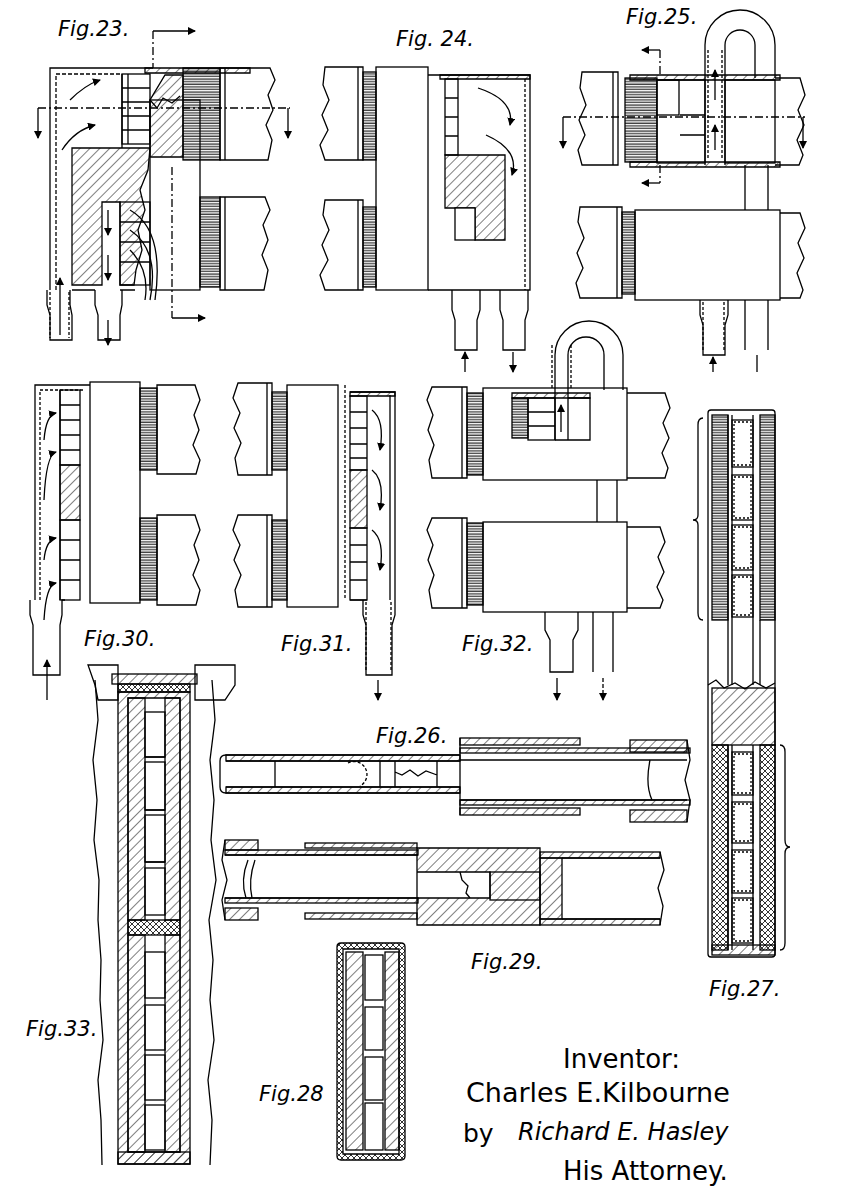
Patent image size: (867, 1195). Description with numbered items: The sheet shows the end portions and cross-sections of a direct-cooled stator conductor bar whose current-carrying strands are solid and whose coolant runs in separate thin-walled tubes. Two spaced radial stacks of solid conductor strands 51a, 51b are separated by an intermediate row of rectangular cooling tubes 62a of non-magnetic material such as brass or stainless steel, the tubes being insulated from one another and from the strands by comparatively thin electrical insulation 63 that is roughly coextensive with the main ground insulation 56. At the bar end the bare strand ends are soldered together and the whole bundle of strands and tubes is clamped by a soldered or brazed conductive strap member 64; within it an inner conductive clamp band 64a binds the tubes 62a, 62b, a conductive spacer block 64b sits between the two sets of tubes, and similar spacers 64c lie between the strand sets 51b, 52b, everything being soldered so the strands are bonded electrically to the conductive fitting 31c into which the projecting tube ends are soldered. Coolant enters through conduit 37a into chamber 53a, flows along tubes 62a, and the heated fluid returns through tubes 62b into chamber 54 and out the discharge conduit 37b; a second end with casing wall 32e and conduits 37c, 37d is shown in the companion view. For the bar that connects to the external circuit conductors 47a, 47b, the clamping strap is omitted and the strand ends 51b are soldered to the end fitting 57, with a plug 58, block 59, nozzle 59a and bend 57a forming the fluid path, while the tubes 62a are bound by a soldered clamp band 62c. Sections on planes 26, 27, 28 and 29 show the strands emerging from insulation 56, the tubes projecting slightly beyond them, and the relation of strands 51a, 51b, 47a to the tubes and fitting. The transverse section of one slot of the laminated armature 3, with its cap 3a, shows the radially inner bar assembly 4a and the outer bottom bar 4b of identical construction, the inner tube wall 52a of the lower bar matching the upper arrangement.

In FIG. 33, the laminated armature 3 is at (100, 868).
In FIG. 33, the frame cap 3a is at (185, 672).
In FIG. 23, the radially inner bar assembly 4a is at (270, 66).
In FIG. 24, the radially inner bar assembly 4a is at (345, 66).
In FIG. 25, the radially inner bar assembly 4a is at (598, 118).
In FIG. 30, the radially inner bar assembly 4a is at (185, 386).
In FIG. 31, the radially inner bar assembly 4a is at (252, 429).
In FIG. 32, the radially inner bar assembly 4a is at (447, 432).
In FIG. 27, the radially inner bar assembly 4a is at (721, 683).
In FIG. 33, the radially inner bar assembly 4a is at (125, 890).
In FIG. 23, the bottom bar 4b is at (268, 222).
In FIG. 24, the bottom bar 4b is at (326, 294).
In FIG. 25, the bottom bar 4b is at (605, 252).
In FIG. 30, the bottom bar 4b is at (200, 518).
In FIG. 31, the bottom bar 4b is at (252, 561).
In FIG. 32, the bottom bar 4b is at (455, 563).
In FIG. 27, the bottom bar 4b is at (794, 847).
In FIG. 33, the bottom bar 4b is at (125, 965).
In FIG. 23, the section plane 26- 26 is at (161, 134).
In FIG. 23, the section plane 27- 27 is at (189, 174).
In FIG. 25, the section plane 28- 28 is at (638, 117).
In FIG. 25, the section plane 29- 29 is at (682, 143).
In FIG. 23, the conductive fitting 31c is at (50, 78).
In FIG. 26, the conductive fitting 31c is at (272, 754).
In FIG. 24, the casing wall 32e is at (532, 74).
In FIG. 31, the casing wall 32e is at (386, 390).
In FIG. 23, the supply conduit 37a is at (50, 330).
In FIG. 30, the supply conduit 37a is at (60, 660).
In FIG. 23, the discharge conduit 37b is at (122, 330).
In FIG. 24, the inlet nozzle 37c is at (455, 338).
In FIG. 32, the inlet nozzle 37c is at (579, 656).
In FIG. 24, the outlet nozzle 37d is at (522, 332).
In FIG. 31, the outlet nozzle 37d is at (392, 660).
In FIG. 25, the external circuit conductor 47a is at (790, 78).
In FIG. 32, the external circuit conductor 47a is at (647, 394).
In FIG. 29, the external circuit conductor 47a is at (612, 926).
In FIG. 25, the external circuit conductor 47b is at (785, 300).
In FIG. 32, the external circuit conductor 47b is at (640, 527).
In FIG. 27, the conductor strand 51a is at (720, 420).
In FIG. 26, the conductor strand 51a is at (600, 759).
In FIG. 29, the conductor strand 51a is at (385, 848).
In FIG. 28, the conductor strand 51a is at (350, 990).
In FIG. 33, the conductor strand 51a is at (132, 725).
In FIG. 23, the conductor strand 51b is at (205, 95).
In FIG. 24, the conductor strand 51b is at (370, 120).
In FIG. 25, the conductor strand 51b is at (638, 128).
In FIG. 30, the conductor strand 51b is at (148, 440).
In FIG. 31, the conductor strand 51b is at (281, 395).
In FIG. 32, the conductor strand 51b is at (475, 434).
In FIG. 27, the conductor strand 51b is at (765, 595).
In FIG. 26, the conductor strand 51b is at (600, 806).
In FIG. 29, the conductor strand 51b is at (292, 908).
In FIG. 28, the conductor strand 51b is at (395, 1062).
In FIG. 33, the conductor strand 51b is at (175, 740).
In FIG. 27, the inner tube wall 52a is at (722, 940).
In FIG. 33, the inner tube wall 52a is at (128, 1070).
In FIG. 23, the conductor strand 52b is at (207, 215).
In FIG. 24, the conductor strand 52b is at (370, 260).
In FIG. 30, the conductor strand 52b is at (148, 572).
In FIG. 31, the conductor strand 52b is at (278, 600).
In FIG. 27, the conductor strand 52b is at (766, 748).
In FIG. 33, the conductor strand 52b is at (182, 1130).
In FIG. 23, the supply chamber 53a is at (92, 112).
In FIG. 26, the supply chamber 53a is at (292, 788).
In FIG. 23, the discharge chamber 54 is at (100, 318).
In FIG. 26, the discharge chamber 54 is at (358, 788).
In FIG. 23, the main insulation 56 is at (248, 68).
In FIG. 26, the main insulation 56 is at (662, 740).
In FIG. 29, the main insulation 56 is at (240, 890).
In FIG. 33, the main insulation 56 is at (120, 740).
In FIG. 25, the end fitting 57 is at (716, 168).
In FIG. 32, the end fitting 57 is at (562, 480).
In FIG. 29, the end fitting 57 is at (500, 855).
In FIG. 28, the end fitting 57 is at (346, 1008).
In FIG. 25, the conduit bend 57a is at (707, 62).
In FIG. 25, the plug 58 is at (722, 112).
In FIG. 29, the plug 58 is at (520, 872).
In FIG. 25, the block 59 is at (673, 296).
In FIG. 32, the block 59 is at (524, 528).
In FIG. 25, the nozzle 59a is at (704, 318).
In FIG. 23, the cooling tube 62a is at (148, 80).
In FIG. 24, the cooling tube 62a is at (450, 130).
In FIG. 25, the cooling tube 62a is at (702, 125).
In FIG. 30, the cooling tube 62a is at (77, 432).
In FIG. 31, the cooling tube 62a is at (358, 455).
In FIG. 27, the cooling tube 62a is at (750, 430).
In FIG. 26, the cooling tube 62a is at (430, 790).
In FIG. 29, the cooling tube 62a is at (440, 920).
In FIG. 28, the cooling tube 62a is at (380, 1015).
In FIG. 33, the cooling tube 62a is at (140, 830).
In FIG. 23, the cooling tube 62b is at (117, 238).
In FIG. 24, the cooling tube 62b is at (450, 232).
In FIG. 30, the cooling tube 62b is at (70, 532).
In FIG. 31, the cooling tube 62b is at (358, 575).
In FIG. 27, the cooling tube 62b is at (745, 930).
In FIG. 33, the cooling tube 62b is at (160, 1075).
In FIG. 25, the soldered clamp band 62c is at (662, 80).
In FIG. 28, the soldered clamp band 62c is at (352, 1045).
In FIG. 26, the thin electrical insulation 63 is at (652, 806).
In FIG. 29, the thin electrical insulation 63 is at (256, 860).
In FIG. 33, the thin electrical insulation 63 is at (145, 800).
In FIG. 23, the conductive strap member 64 is at (175, 193).
In FIG. 24, the conductive strap member 64 is at (418, 266).
In FIG. 25, the conductive strap member 64 is at (705, 121).
In FIG. 30, the conductive strap member 64 is at (138, 490).
In FIG. 31, the conductive strap member 64 is at (330, 385).
In FIG. 32, the conductive strap member 64 is at (555, 434).
In FIG. 27, the conductive strap member 64 is at (712, 694).
In FIG. 26, the conductive strap member 64 is at (492, 738).
In FIG. 23, the inner conductive clamp band 64a is at (177, 75).
In FIG. 27, the inner conductive clamp band 64a is at (756, 578).
In FIG. 26, the inner conductive clamp band 64a is at (542, 748).
In FIG. 27, the conductive spacer block 64b is at (740, 635).
In FIG. 23, the conductive spacer 64c is at (185, 152).
In FIG. 27, the conductive spacer 64c is at (718, 665).